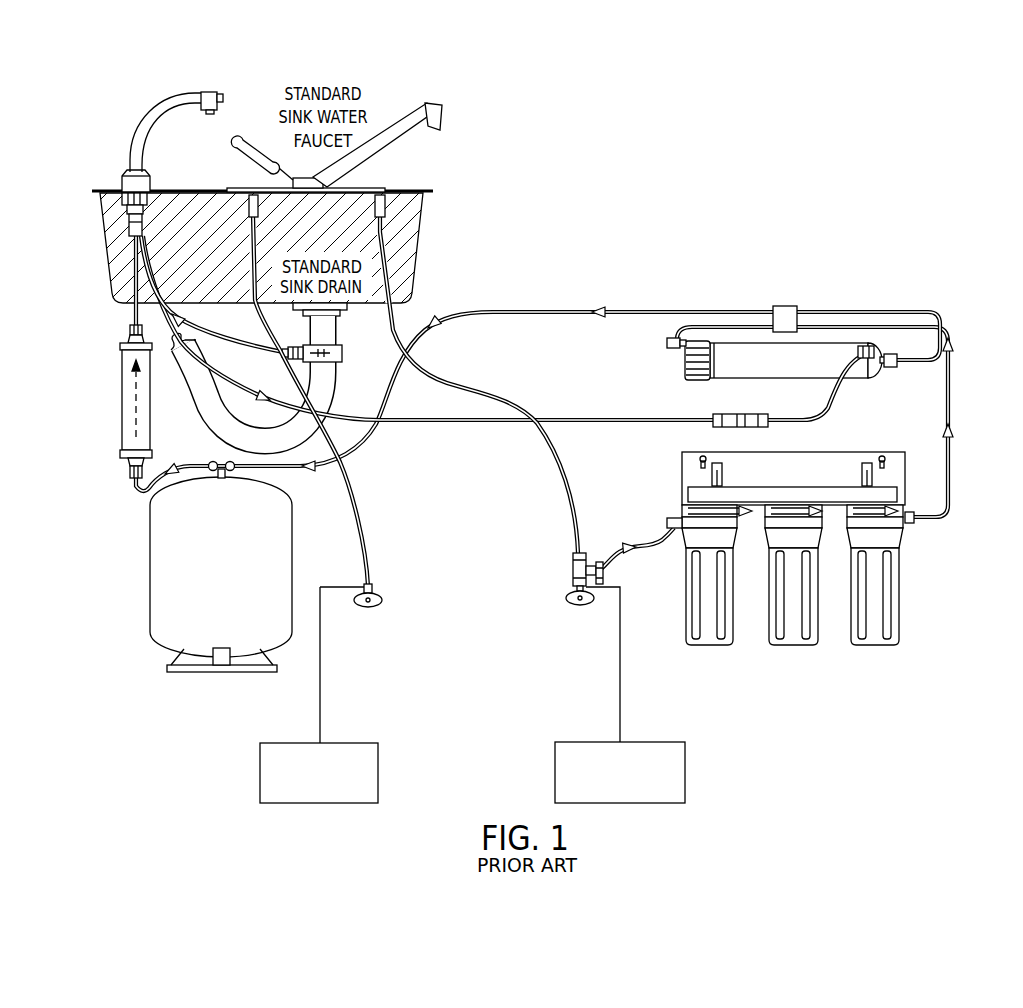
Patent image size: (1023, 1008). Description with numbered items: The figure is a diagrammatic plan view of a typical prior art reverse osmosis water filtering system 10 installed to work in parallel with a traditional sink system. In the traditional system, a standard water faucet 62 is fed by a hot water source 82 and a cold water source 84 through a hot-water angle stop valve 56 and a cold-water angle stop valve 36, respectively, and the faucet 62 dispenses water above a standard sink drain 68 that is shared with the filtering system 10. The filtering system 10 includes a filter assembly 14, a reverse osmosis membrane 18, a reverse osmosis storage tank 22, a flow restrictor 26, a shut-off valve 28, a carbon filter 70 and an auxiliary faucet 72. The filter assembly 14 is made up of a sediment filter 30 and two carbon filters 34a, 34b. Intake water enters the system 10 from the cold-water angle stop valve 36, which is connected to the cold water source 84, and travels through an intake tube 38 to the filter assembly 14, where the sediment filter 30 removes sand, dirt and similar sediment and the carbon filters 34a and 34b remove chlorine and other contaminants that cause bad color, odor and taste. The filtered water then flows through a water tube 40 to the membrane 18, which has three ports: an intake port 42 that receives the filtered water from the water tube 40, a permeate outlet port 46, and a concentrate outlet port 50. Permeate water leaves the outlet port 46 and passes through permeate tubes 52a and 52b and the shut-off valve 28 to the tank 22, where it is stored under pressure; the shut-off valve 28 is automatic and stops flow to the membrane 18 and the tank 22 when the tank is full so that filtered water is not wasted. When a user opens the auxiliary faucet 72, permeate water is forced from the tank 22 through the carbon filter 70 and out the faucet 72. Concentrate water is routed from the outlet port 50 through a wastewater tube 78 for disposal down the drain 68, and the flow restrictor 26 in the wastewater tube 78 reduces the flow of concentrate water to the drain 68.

The reverse osmosis water filtering system 10 is at (830, 207).
The filter assembly 14 is at (786, 480).
The reverse osmosis membrane 18 is at (750, 343).
The reverse osmosis storage tank 22 is at (212, 541).
The flow restrictor 26 is at (748, 413).
The shut-off valve 28 is at (785, 305).
The sediment filter 30 is at (708, 647).
The carbon filter 34a is at (793, 647).
The carbon filter 34b is at (876, 647).
The cold-water angle stop valve 36 is at (574, 609).
The intake tube 38 is at (650, 540).
The water tube 40 is at (950, 450).
The intake port 42 is at (667, 343).
The permeate outlet port 46 is at (890, 367).
The concentrate outlet port 50 is at (862, 346).
The permeate tube 52a is at (932, 311).
The permeate tube 52b is at (580, 305).
The hot-water angle stop valve 56 is at (371, 612).
The standard water faucet 62 is at (392, 148).
The standard sink drain 68 is at (341, 377).
The carbon filter 70 is at (133, 384).
The auxiliary faucet 72 is at (140, 126).
The wastewater tube 78 is at (445, 424).
The hot water source 82 is at (260, 774).
The cold water source 84 is at (685, 782).